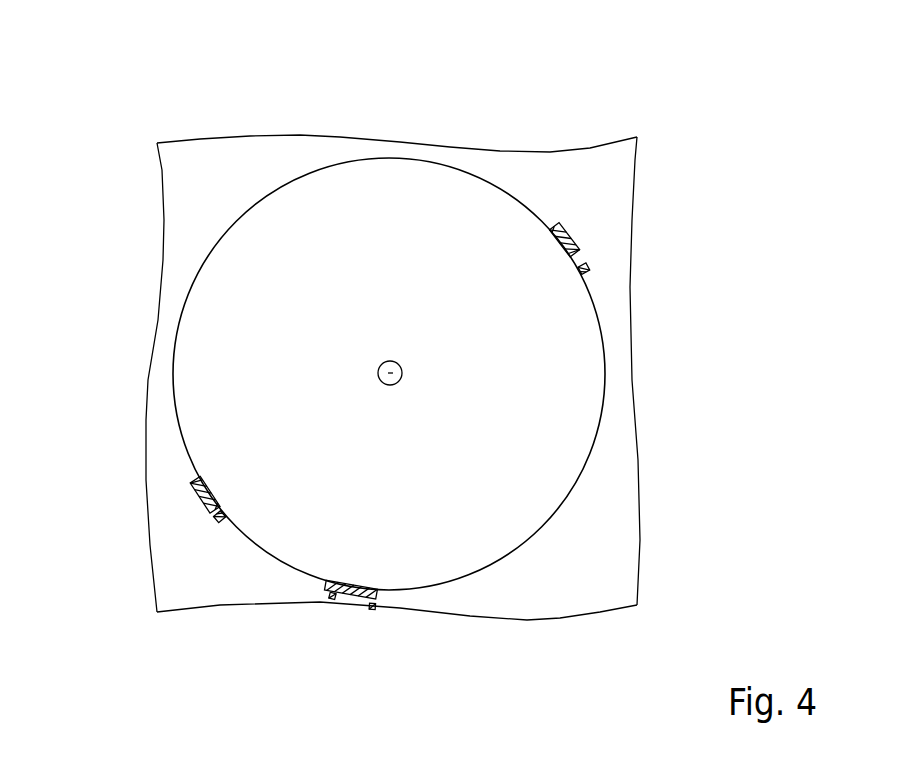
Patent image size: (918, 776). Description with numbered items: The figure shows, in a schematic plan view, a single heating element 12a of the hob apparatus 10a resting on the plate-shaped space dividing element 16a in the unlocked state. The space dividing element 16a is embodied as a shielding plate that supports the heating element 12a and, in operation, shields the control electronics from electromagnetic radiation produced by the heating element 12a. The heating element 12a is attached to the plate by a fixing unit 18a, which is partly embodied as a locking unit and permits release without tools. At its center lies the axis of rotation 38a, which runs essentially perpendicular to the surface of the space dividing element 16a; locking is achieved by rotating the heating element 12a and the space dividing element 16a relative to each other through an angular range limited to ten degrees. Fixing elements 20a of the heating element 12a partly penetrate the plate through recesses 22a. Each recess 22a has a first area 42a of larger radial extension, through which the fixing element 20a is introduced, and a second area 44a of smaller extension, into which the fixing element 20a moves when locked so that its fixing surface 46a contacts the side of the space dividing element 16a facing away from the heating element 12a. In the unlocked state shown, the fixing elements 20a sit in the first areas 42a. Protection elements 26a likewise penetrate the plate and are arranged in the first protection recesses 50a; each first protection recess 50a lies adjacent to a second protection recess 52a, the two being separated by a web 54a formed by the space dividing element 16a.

The hob apparatus 10a is at (622, 104).
The heating element 12a is at (386, 188).
The space dividing element 16a is at (617, 468).
The fixing unit 18a is at (546, 186).
The fixing element 20a is at (578, 228).
The recess 22a is at (588, 272).
The protection element 26a is at (362, 612).
The axis of rotation 38a is at (402, 372).
The first area 42a is at (583, 218).
The second area 44a is at (592, 255).
The fixing surface 46a is at (590, 240).
The first protection recess 50a is at (372, 608).
The second protection recess 52a is at (333, 598).
The web 54a is at (343, 603).